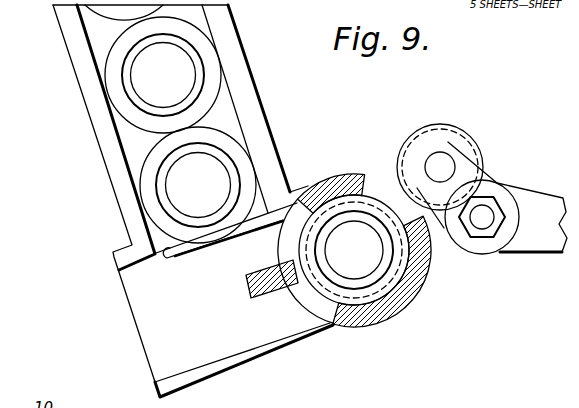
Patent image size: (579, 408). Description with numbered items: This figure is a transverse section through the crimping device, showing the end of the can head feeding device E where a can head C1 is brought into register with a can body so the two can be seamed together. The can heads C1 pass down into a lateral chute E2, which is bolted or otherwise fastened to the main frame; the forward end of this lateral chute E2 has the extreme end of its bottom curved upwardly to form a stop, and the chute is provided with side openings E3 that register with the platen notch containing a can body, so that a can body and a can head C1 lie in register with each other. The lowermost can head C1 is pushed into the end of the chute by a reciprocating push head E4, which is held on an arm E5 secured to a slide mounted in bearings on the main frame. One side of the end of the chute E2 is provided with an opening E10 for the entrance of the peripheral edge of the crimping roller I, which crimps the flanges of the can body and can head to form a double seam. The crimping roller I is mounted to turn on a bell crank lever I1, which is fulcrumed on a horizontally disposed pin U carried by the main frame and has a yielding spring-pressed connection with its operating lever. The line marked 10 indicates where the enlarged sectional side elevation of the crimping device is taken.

The can head feeding device E is at (245, 60).
The can head C1 is at (138, 90).
The lateral chute E2 is at (233, 343).
The side openings E3 is at (178, 260).
The push head E4 is at (307, 293).
The arm E5 is at (250, 287).
The opening E10 is at (378, 189).
The section line 10— 10 is at (353, 158).
The crimping roller I is at (440, 124).
The bell crank lever I1 is at (497, 180).
The pin U is at (482, 222).